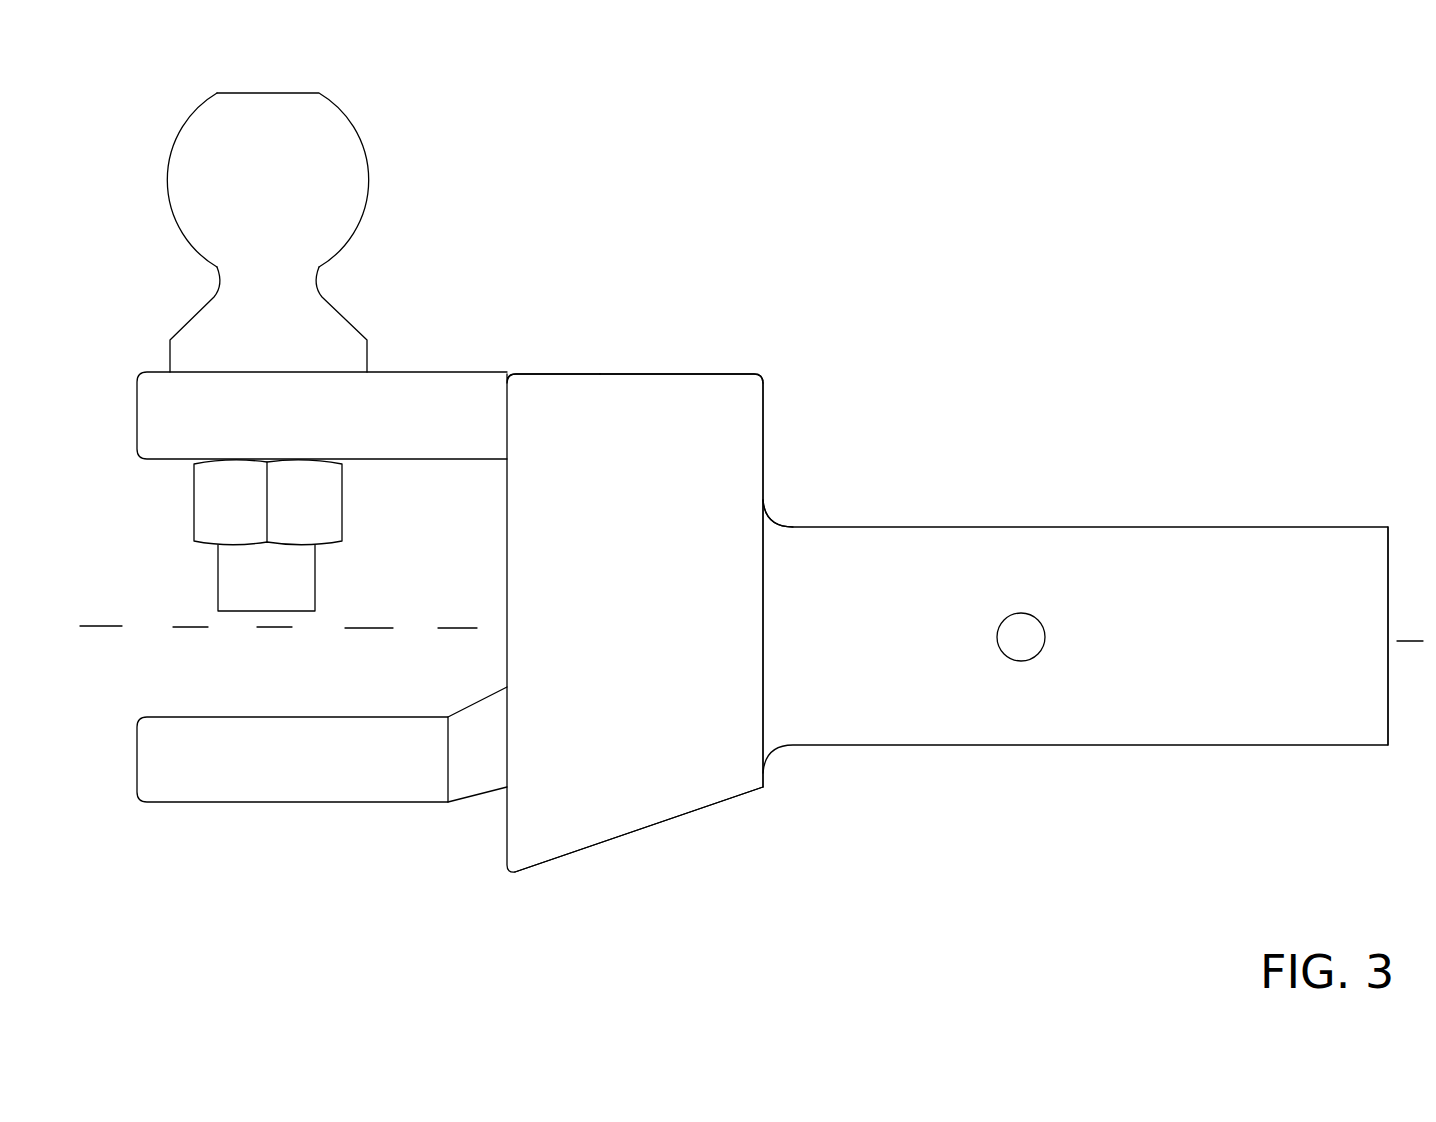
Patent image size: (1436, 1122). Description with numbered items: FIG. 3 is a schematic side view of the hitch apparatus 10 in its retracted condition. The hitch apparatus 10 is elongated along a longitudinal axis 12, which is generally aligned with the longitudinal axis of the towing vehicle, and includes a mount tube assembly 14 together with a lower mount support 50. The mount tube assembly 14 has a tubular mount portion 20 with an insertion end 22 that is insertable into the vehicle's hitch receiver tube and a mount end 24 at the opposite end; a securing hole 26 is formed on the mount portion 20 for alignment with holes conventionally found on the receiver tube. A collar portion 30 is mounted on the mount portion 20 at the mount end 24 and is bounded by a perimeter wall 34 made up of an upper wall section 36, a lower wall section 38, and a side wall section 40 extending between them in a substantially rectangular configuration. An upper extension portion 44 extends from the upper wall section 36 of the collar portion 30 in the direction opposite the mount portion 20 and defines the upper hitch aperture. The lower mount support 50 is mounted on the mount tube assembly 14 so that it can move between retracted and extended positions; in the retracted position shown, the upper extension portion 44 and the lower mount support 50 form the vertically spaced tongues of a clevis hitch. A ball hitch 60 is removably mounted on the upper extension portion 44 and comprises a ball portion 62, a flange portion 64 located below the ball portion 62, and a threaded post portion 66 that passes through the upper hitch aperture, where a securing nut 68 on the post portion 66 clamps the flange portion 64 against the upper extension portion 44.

The hitch apparatus 10 is at (1131, 170).
The longitudinal axis 12 is at (100, 626).
The mount tube assembly 14 is at (933, 326).
The mount portion 20 is at (1060, 530).
The insertion end 22 is at (1370, 530).
The mount end 24 is at (772, 512).
The securing hole 26 is at (1004, 658).
The collar portion 30 is at (668, 338).
The perimeter wall 34 is at (700, 375).
The upper wall section 36 is at (550, 375).
The lower wall section 38 is at (588, 847).
The side wall section 40 is at (680, 750).
The upper extension portion 44 is at (393, 373).
The lower mount support 50 is at (278, 835).
The ball hitch 60 is at (395, 147).
The ball portion 62 is at (283, 127).
The flange portion 64 is at (327, 347).
The post portion 66 is at (300, 583).
The securing nut 68 is at (315, 517).